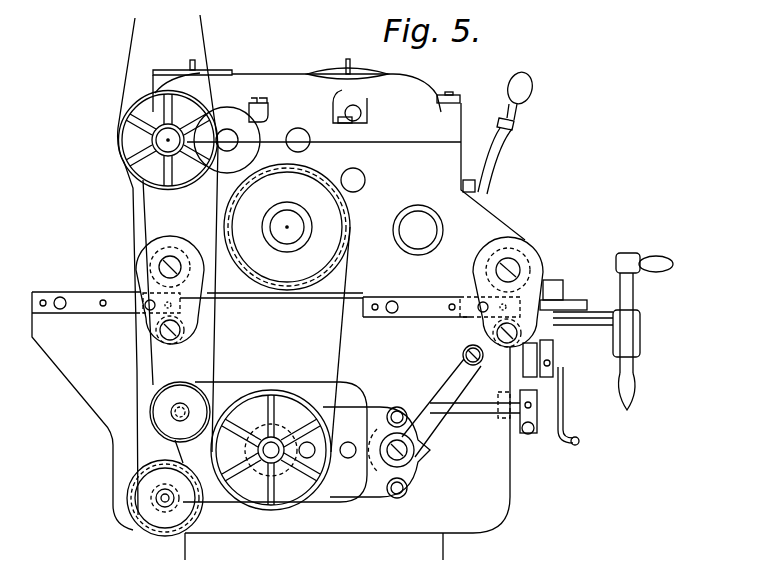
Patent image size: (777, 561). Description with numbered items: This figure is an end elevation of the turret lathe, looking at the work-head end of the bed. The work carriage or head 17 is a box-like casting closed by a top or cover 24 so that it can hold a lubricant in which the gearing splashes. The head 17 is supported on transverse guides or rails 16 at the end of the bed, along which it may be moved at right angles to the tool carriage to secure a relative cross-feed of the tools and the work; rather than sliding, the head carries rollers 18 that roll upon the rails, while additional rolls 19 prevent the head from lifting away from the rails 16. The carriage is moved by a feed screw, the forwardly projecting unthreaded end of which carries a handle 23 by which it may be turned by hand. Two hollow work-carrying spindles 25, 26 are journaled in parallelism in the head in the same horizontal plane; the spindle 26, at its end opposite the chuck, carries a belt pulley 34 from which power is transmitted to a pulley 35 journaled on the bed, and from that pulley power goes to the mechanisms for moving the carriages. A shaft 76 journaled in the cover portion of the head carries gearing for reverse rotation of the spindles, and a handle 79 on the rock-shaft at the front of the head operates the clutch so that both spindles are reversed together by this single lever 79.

The transverse guides or rails 16 is at (85, 307).
The work carriage or head 17 is at (356, 169).
The rollers 18 is at (187, 252).
The additional rolls 19 is at (160, 270).
The handle 23 is at (628, 303).
The top or cover 24 is at (423, 87).
The hollow work-carrying spindle 25 is at (407, 247).
The hollow work-carrying spindle 26 is at (305, 227).
The belt pulley 34 is at (300, 273).
The pulley 35 is at (307, 390).
The shaft 76 is at (358, 112).
The handle 79 is at (513, 110).